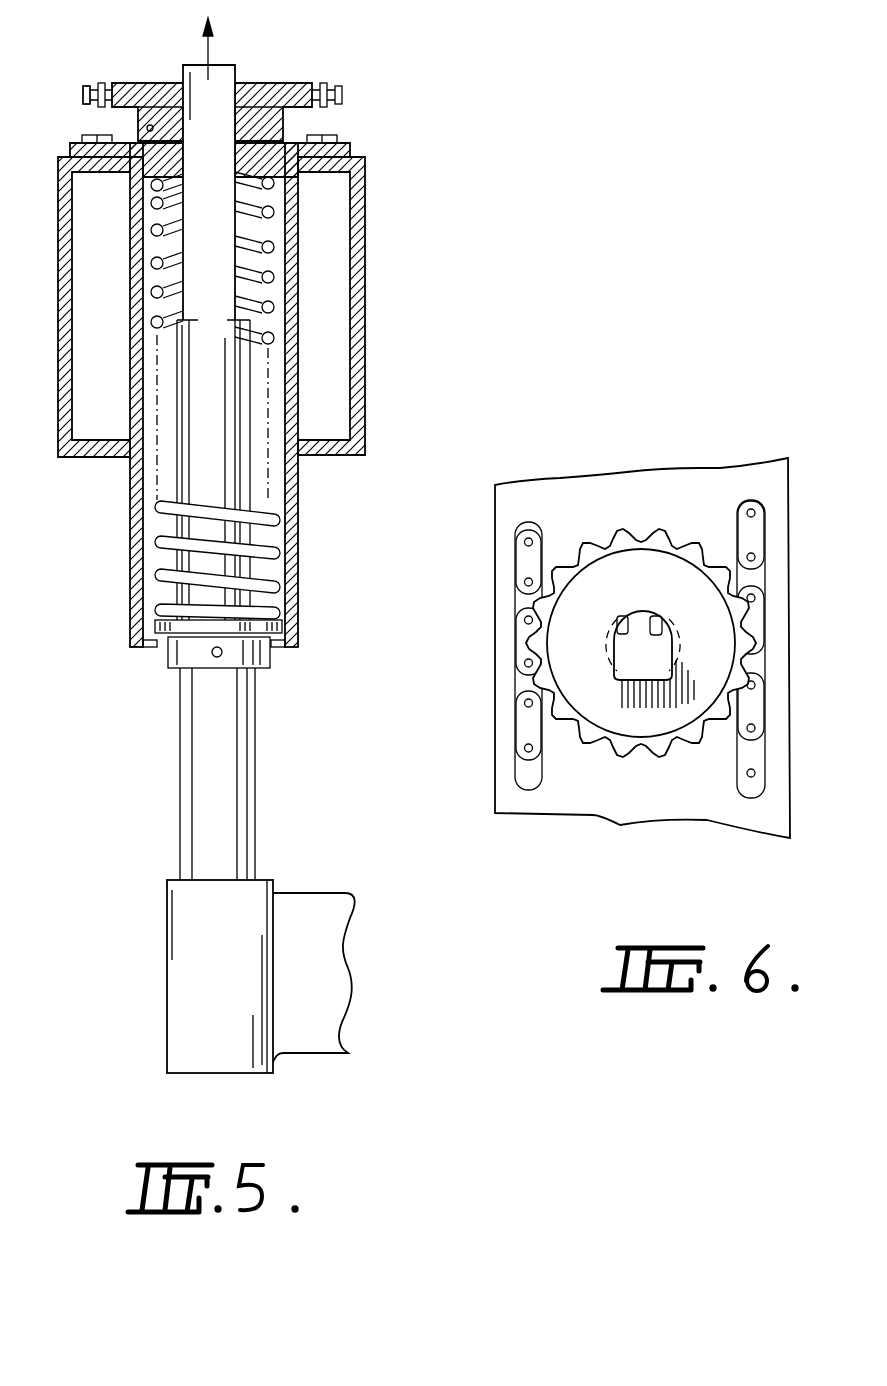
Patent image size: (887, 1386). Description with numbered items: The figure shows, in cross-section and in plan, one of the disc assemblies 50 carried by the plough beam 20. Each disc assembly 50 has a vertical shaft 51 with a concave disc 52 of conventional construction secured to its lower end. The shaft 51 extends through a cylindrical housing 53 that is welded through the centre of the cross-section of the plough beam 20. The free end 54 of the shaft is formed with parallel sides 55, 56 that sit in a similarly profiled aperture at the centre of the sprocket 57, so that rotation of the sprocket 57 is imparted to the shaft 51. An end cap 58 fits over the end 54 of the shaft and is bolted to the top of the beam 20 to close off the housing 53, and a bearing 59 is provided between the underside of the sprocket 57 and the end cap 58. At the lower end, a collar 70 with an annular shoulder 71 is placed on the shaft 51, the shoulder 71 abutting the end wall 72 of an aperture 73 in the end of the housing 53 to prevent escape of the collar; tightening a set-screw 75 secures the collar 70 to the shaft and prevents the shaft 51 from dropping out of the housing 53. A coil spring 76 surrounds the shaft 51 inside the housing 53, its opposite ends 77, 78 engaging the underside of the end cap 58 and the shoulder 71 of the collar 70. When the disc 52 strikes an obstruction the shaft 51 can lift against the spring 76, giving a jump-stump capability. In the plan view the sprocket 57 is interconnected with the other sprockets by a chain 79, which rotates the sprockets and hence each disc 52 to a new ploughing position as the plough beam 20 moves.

In FIG. 5, the plough beam 20 is at (360, 274).
In FIG. 6, the plough beam 20 is at (643, 497).
In FIG. 5, the disc assembly 50 is at (387, 355).
In FIG. 5, the vertical shaft 51 is at (222, 418).
In FIG. 6, the vertical shaft 51 is at (620, 680).
In FIG. 5, the concave disc 52 is at (310, 990).
In FIG. 5, the cylindrical housing 53 is at (287, 322).
In FIG. 5, the free end of the shaft 54 is at (190, 66).
In FIG. 6, the free end of the shaft 54 is at (632, 657).
In FIG. 6, the parallel side 55 is at (625, 617).
In FIG. 5, the parallel side 56 is at (243, 225).
In FIG. 6, the parallel side 56 is at (657, 617).
In FIG. 5, the sprocket 57 is at (265, 95).
In FIG. 6, the sprocket 57 is at (568, 622).
In FIG. 5, the end cap 58 is at (287, 128).
In FIG. 5, the bearing 59 is at (137, 120).
In FIG. 5, the collar 70 is at (270, 668).
In FIG. 5, the annular shoulder 71 is at (153, 609).
In FIG. 5, the end wall 72 is at (273, 643).
In FIG. 5, the aperture 73 is at (162, 655).
In FIG. 5, the set-screw 75 is at (213, 654).
In FIG. 5, the coil spring 76 is at (278, 519).
In FIG. 5, the end of the coil spring 77 is at (273, 184).
In FIG. 5, the end of the coil spring 78 is at (277, 613).
In FIG. 5, the chain 79 is at (103, 83).
In FIG. 6, the chain 79 is at (745, 497).